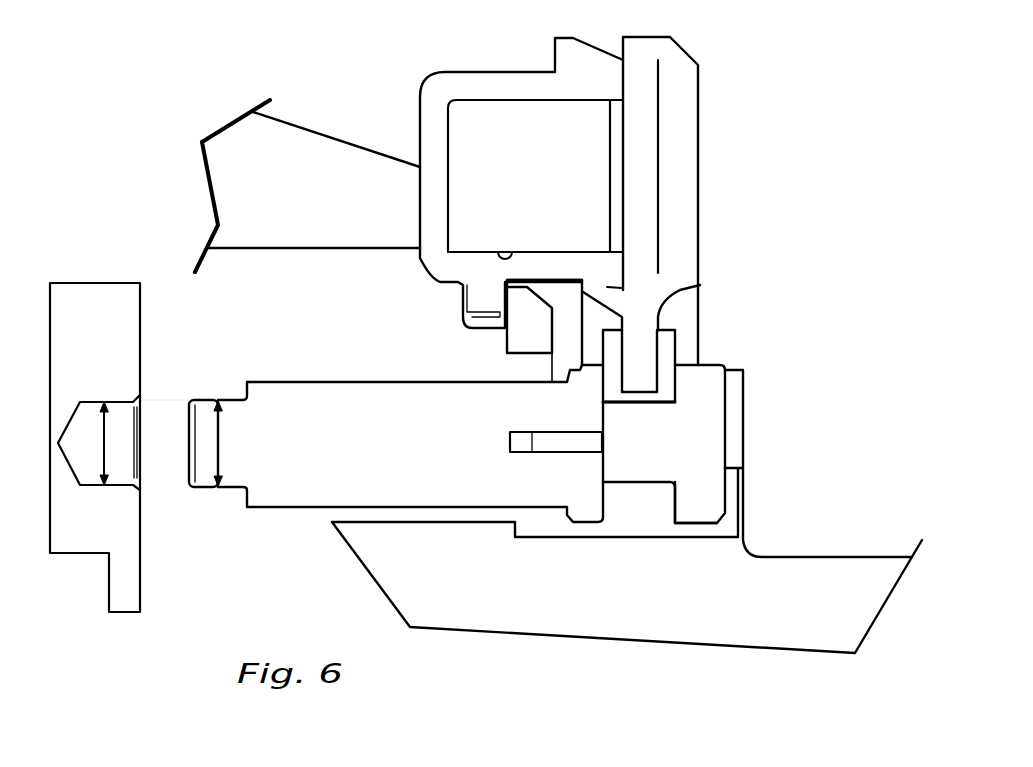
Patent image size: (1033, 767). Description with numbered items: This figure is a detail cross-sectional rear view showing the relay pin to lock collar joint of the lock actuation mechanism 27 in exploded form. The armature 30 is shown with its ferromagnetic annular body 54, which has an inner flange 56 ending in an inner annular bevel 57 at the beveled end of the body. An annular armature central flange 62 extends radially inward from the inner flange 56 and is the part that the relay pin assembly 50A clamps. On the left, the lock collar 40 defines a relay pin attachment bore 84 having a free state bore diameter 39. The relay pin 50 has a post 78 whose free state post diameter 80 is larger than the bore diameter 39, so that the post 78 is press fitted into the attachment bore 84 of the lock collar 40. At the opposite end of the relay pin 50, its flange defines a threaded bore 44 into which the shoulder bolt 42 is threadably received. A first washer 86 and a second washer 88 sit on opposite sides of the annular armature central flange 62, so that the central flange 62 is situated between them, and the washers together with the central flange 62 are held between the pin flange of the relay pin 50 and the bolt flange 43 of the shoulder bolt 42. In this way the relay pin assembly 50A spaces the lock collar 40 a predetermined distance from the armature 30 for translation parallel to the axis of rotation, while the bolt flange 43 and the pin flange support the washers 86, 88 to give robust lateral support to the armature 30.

The lock actuation mechanism 27 is at (754, 31).
The armature 30 is at (683, 108).
The ferromagnetic annular body 54 is at (687, 173).
The inner annular bevel 57 is at (605, 283).
The inner flange 56 is at (780, 191).
The annular armature central flange 62 is at (637, 365).
The second washer 88 is at (667, 358).
The shoulder bolt 42 is at (662, 433).
The relay pin assembly 50A is at (783, 498).
The lock collar 40 is at (97, 283).
The free state bore diameter 39 is at (105, 443).
The relay pin attachment bore 84 is at (120, 483).
The relay pin 50 is at (357, 380).
The post 78 is at (203, 477).
The free state post diameter 80 is at (220, 443).
The first washer 86 is at (608, 340).
The threaded bore 44 is at (553, 455).
The bolt flange 43 is at (703, 512).